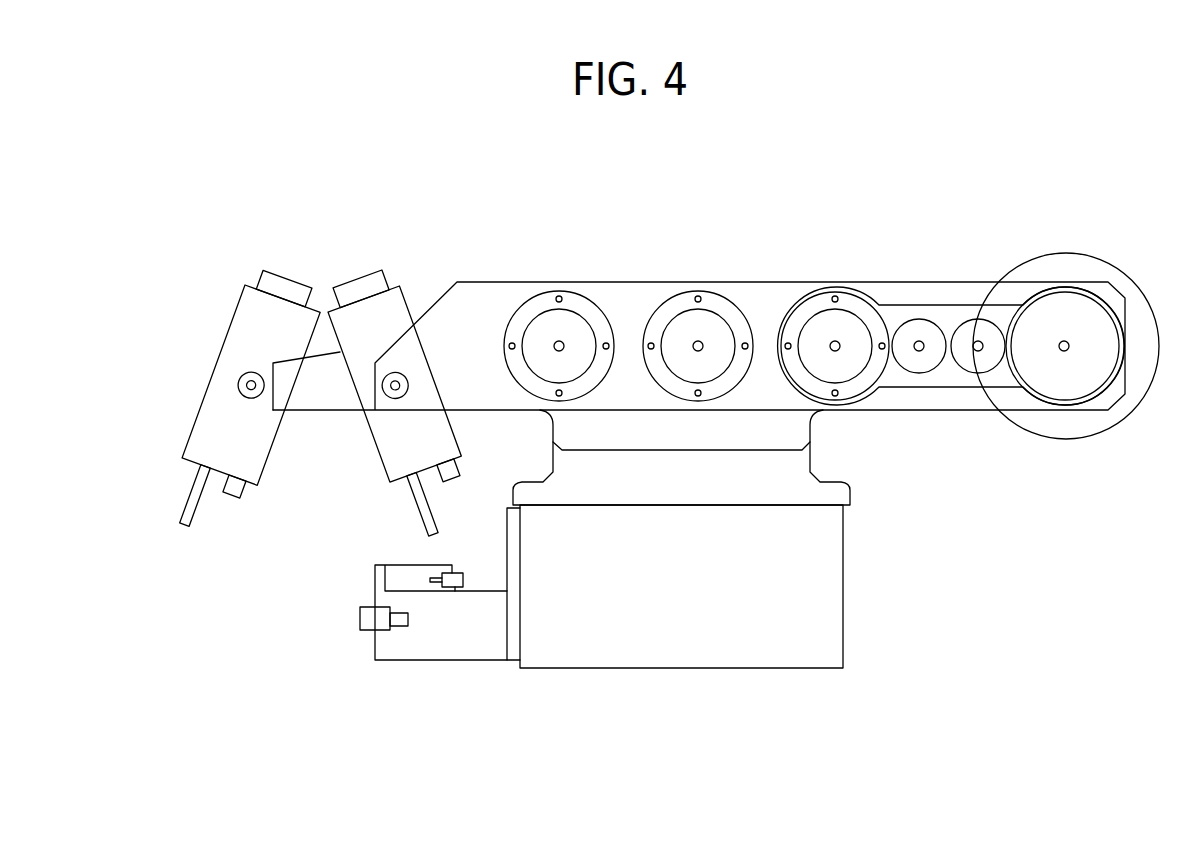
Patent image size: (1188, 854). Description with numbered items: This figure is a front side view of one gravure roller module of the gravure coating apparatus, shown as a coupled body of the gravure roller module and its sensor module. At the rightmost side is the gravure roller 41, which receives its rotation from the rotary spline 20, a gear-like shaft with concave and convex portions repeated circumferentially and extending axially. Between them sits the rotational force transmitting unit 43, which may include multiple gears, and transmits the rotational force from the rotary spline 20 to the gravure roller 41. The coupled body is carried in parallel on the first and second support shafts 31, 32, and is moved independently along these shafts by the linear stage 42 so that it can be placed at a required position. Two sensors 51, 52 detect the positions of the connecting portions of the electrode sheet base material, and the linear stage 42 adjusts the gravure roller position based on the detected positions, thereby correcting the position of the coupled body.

The rotary spline 20 is at (822, 293).
The first support shaft 31 is at (711, 295).
The second support shaft 32 is at (576, 296).
The gravure roller 41 is at (1065, 252).
The linear stage 42 is at (538, 680).
The rotational force transmitting unit 43 is at (978, 327).
The sensor 51 is at (202, 430).
The sensor 52 is at (397, 455).